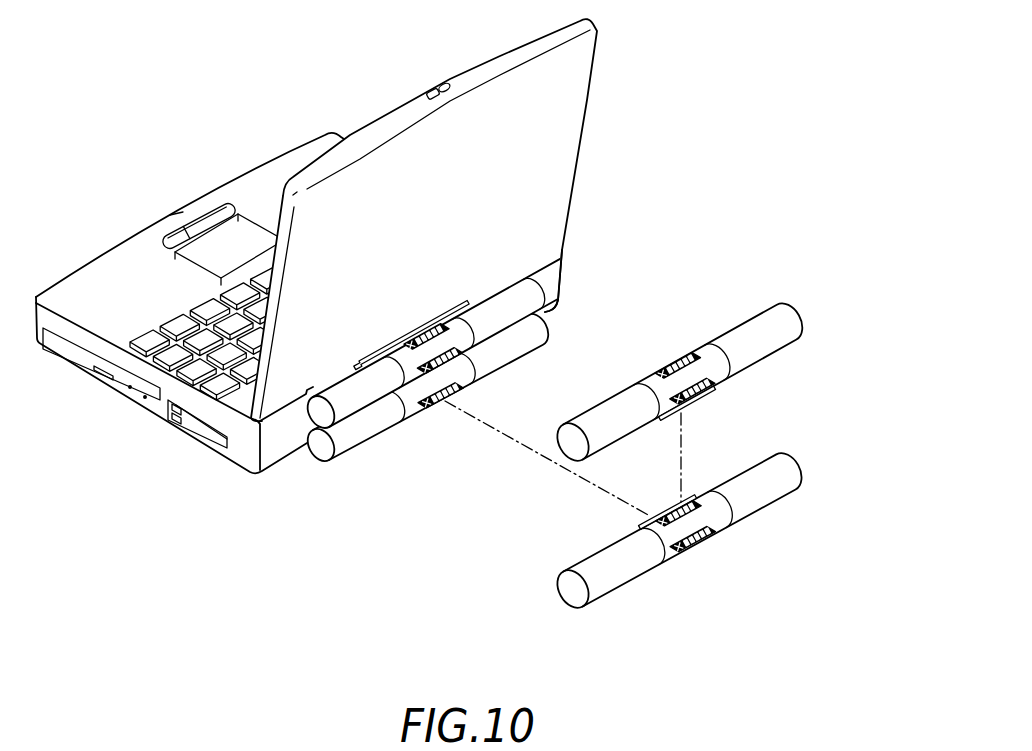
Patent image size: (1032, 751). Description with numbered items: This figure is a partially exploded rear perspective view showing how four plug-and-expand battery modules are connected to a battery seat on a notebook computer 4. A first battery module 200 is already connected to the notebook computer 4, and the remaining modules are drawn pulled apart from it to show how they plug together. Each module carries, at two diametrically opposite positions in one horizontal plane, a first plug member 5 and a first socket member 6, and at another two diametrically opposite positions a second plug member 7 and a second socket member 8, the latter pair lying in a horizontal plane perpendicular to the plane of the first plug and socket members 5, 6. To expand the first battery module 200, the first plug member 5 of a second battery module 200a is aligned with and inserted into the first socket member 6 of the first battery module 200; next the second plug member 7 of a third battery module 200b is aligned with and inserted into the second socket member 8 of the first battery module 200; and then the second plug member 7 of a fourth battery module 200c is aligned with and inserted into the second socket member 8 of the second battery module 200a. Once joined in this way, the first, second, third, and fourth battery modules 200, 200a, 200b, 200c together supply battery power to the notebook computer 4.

The notebook computer 4 is at (273, 448).
The first plug member 5 is at (641, 513).
The first socket member 6 is at (720, 380).
The second plug member 7 is at (463, 373).
The second socket member 8 is at (431, 338).
The first battery module 200 is at (568, 324).
The second battery module 200a is at (770, 527).
The third battery module 200b is at (563, 278).
The fourth battery module 200c is at (812, 292).